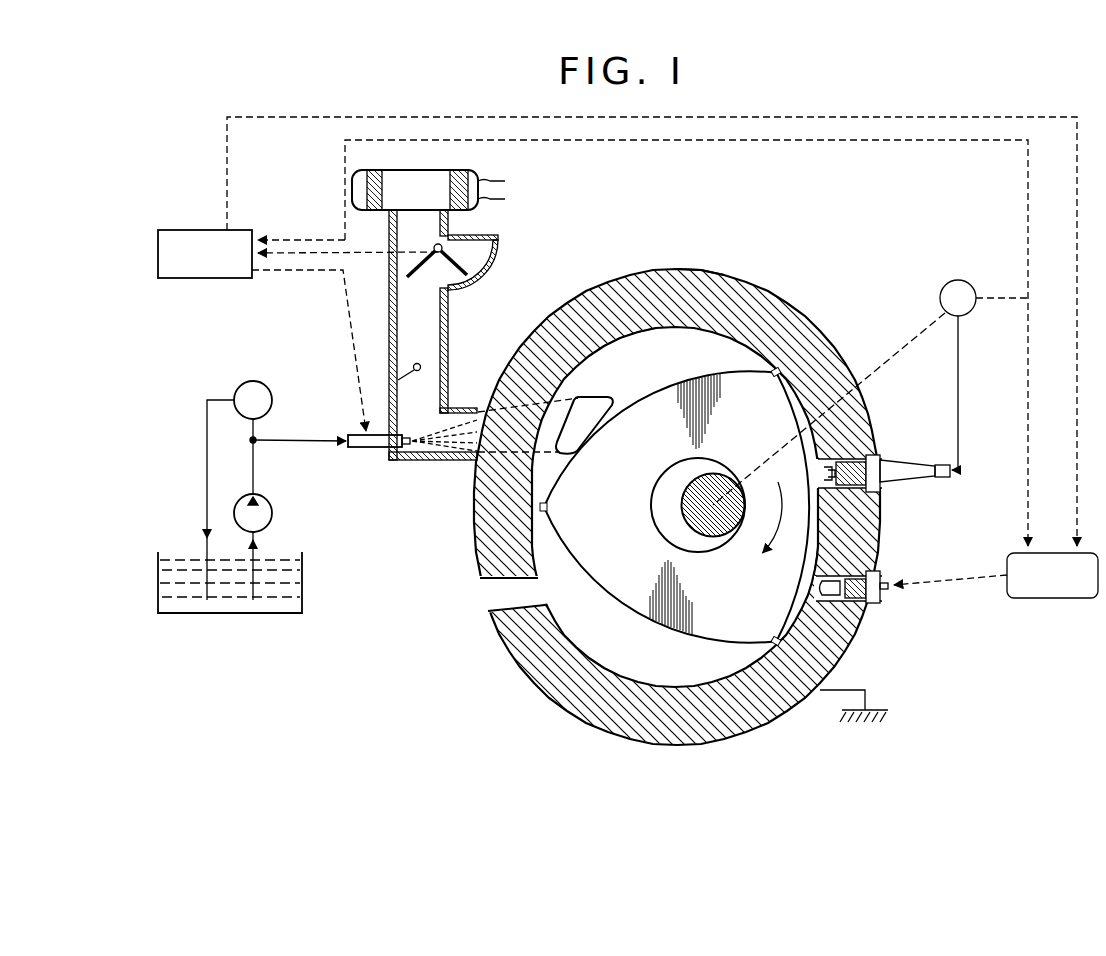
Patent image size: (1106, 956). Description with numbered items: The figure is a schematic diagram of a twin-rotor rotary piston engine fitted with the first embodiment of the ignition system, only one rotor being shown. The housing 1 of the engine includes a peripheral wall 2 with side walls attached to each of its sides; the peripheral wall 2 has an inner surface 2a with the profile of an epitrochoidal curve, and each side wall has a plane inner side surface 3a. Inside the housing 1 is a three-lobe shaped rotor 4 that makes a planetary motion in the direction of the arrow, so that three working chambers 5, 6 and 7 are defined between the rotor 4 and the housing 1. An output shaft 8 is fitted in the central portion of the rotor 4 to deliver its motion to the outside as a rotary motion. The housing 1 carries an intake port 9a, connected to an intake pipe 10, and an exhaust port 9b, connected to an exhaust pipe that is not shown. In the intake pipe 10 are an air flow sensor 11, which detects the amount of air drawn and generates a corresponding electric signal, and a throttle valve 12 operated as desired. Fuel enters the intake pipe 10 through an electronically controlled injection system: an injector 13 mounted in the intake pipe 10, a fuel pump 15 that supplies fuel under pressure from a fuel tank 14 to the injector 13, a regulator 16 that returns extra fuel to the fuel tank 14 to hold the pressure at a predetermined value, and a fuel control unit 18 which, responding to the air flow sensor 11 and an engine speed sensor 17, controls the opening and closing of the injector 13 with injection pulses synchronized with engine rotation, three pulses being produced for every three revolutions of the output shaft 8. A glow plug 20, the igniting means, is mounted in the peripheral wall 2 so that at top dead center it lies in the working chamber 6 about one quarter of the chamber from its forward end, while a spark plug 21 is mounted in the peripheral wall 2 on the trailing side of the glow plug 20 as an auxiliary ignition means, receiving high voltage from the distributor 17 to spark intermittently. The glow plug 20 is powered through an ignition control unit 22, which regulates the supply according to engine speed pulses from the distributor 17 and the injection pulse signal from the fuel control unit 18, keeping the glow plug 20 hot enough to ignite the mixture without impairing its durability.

The housing 1 is at (818, 338).
The peripheral wall 2 is at (703, 286).
The inner surface 2a is at (743, 340).
The inner side surface 3a is at (640, 338).
The rotor 4 is at (786, 403).
The working chamber 5 is at (608, 355).
The working chamber 6 is at (817, 558).
The working chamber 7 is at (602, 645).
The output shaft 8 is at (724, 520).
The intake port 9a is at (594, 401).
The exhaust port 9b is at (490, 602).
The intake pipe 10 is at (420, 461).
The air flow sensor 11 is at (487, 270).
The throttle valve 12 is at (421, 365).
The injector 13 is at (368, 448).
The fuel tank 14 is at (304, 605).
The fuel pump 15 is at (272, 514).
The regulator 16 is at (272, 400).
The engine speed sensor 17 is at (971, 282).
The fuel control unit 18 is at (197, 279).
The glow plug 20 is at (882, 602).
The spark plug 21 is at (902, 459).
The ignition control unit 22 is at (1057, 599).